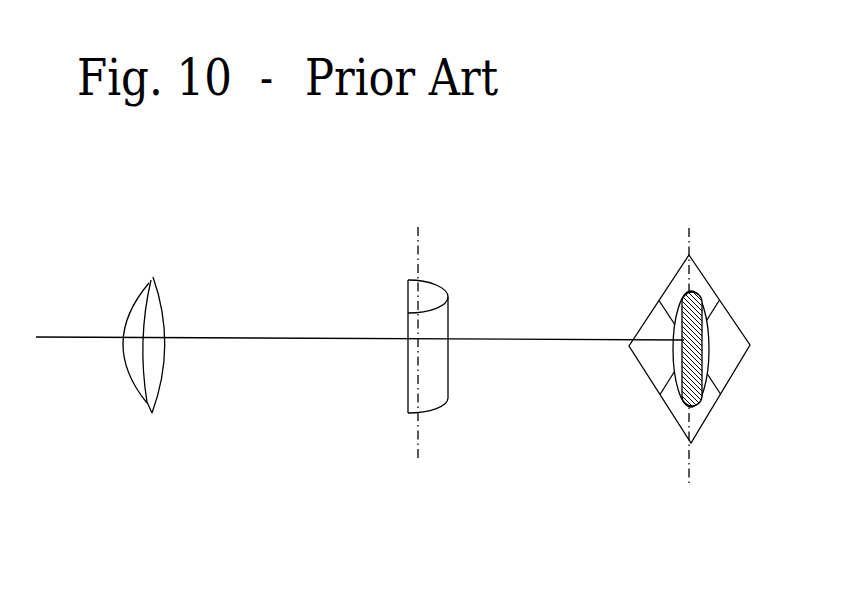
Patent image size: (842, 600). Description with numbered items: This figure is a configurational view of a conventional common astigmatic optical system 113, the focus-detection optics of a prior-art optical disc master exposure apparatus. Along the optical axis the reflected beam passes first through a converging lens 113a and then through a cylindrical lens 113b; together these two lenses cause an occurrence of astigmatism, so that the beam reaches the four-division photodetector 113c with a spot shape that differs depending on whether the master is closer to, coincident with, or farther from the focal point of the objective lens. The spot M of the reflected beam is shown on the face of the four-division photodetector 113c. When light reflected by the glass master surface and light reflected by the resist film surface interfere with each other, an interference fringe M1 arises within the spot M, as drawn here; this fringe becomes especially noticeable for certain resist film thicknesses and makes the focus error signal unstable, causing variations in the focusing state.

The astigmatic optical system 113 is at (434, 274).
The converging lens 113a is at (152, 413).
The cylindrical lens 113b is at (447, 402).
The 4-division photodetector 113c is at (712, 410).
The spot M is at (674, 338).
The interference fringe M1 is at (690, 317).